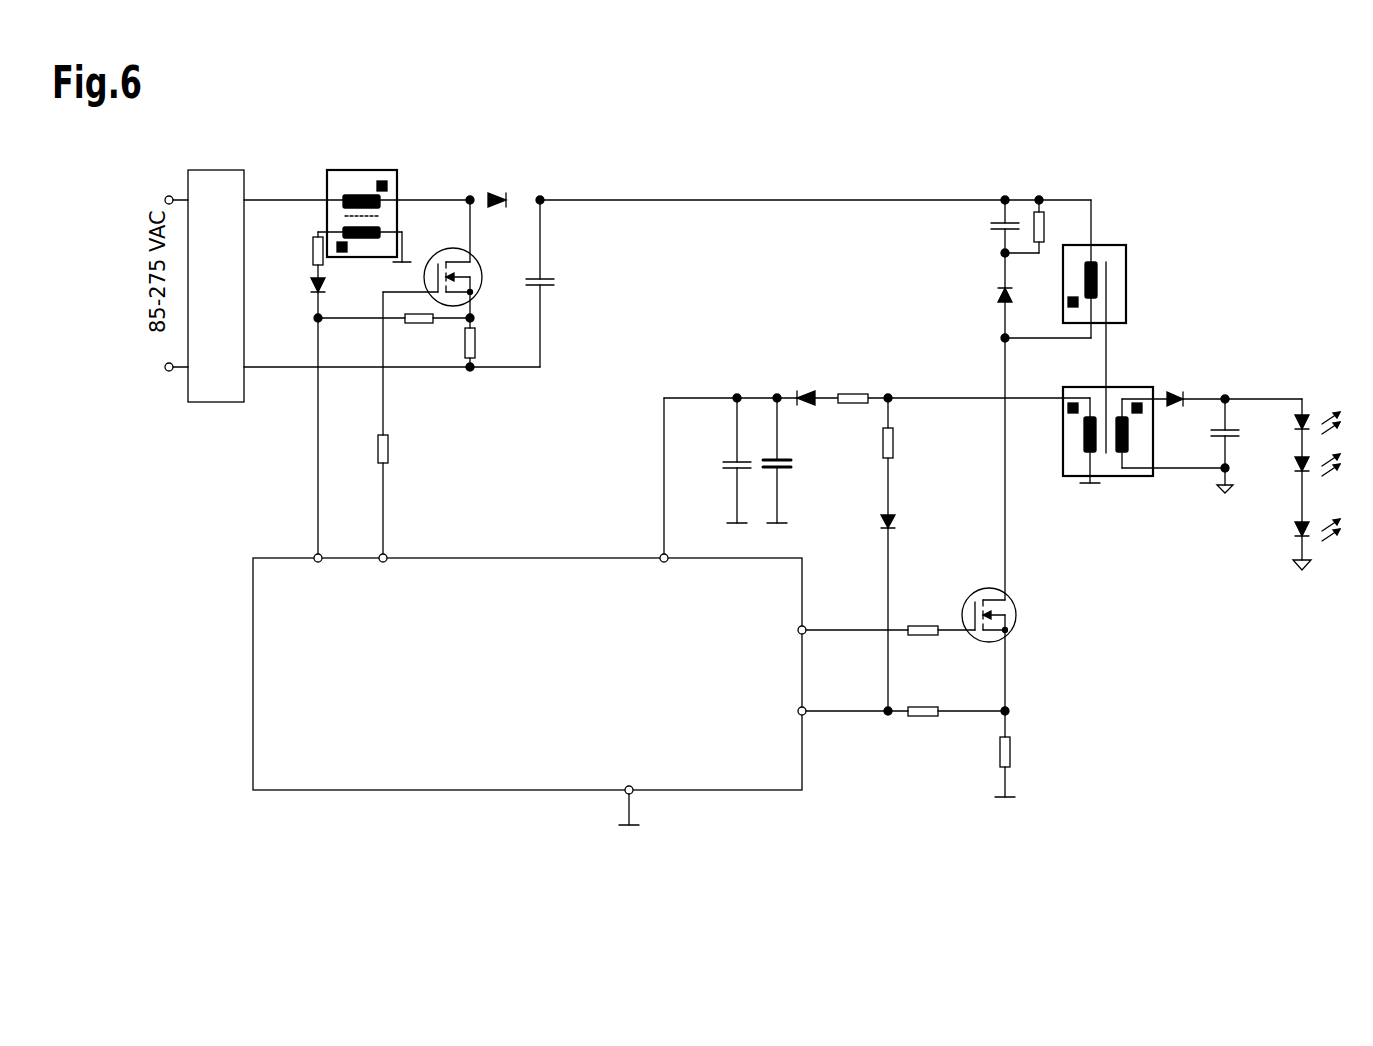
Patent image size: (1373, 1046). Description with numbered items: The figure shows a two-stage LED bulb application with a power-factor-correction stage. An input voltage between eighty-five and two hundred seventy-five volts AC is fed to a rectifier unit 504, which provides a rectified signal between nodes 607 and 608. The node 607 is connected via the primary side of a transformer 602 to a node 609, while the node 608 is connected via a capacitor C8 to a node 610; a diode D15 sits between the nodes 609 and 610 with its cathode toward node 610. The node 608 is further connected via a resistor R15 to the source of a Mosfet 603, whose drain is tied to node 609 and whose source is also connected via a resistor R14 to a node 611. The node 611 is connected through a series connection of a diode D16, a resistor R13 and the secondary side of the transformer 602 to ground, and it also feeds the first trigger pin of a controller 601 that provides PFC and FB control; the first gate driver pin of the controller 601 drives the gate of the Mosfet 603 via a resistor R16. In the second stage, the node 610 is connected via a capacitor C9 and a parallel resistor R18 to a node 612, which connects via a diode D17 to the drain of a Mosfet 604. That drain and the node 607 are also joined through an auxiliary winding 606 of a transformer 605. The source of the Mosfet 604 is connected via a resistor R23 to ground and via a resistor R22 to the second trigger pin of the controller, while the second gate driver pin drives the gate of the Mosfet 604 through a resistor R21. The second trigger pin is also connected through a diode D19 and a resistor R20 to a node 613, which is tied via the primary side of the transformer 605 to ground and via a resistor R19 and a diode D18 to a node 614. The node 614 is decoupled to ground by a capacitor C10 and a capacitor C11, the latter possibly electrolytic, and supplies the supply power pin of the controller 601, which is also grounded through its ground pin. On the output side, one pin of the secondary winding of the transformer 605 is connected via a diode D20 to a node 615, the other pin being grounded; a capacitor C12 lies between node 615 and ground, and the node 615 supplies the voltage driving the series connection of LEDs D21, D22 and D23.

The rectifier unit 504 is at (208, 402).
The controller 601 is at (313, 792).
The transformer 602 is at (372, 170).
The Mosfet 603 is at (452, 279).
The Mosfet 604 is at (1012, 615).
The transformer 605 is at (1125, 476).
The auxiliary winding 606 is at (1130, 268).
The node 607 is at (357, 186).
The node 608 is at (392, 382).
The node 609 is at (457, 217).
The node 610 is at (813, 188).
The node 611 is at (342, 319).
The node 612 is at (999, 252).
The node 613 is at (904, 385).
The node 614 is at (740, 387).
The node 615 is at (1228, 384).
The resistor R13 is at (294, 255).
The resistor R14 is at (435, 332).
The resistor R15 is at (491, 349).
The resistor R16 is at (406, 496).
The resistor R18 is at (1061, 224).
The resistor R19 is at (856, 386).
The resistor R20 is at (912, 456).
The resistor R21 is at (890, 618).
The resistor R22 is at (907, 698).
The resistor R23 is at (986, 713).
The capacitor C8 is at (531, 283).
The capacitor C9 is at (990, 244).
The capacitor C10 is at (724, 460).
The capacitor C11 is at (794, 460).
The capacitor C12 is at (1209, 446).
The diode D15 is at (502, 184).
The diode D16 is at (296, 287).
The diode D17 is at (985, 443).
The diode D18 is at (808, 382).
The diode D19 is at (916, 609).
The diode D20 is at (1231, 383).
The LED D21 is at (1296, 424).
The LED D22 is at (1296, 467).
The LED D23 is at (1296, 532).